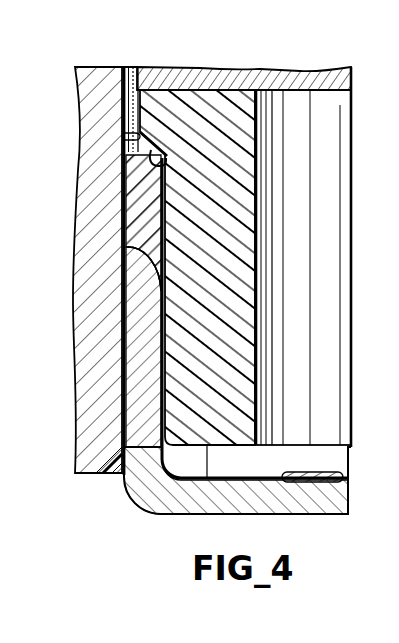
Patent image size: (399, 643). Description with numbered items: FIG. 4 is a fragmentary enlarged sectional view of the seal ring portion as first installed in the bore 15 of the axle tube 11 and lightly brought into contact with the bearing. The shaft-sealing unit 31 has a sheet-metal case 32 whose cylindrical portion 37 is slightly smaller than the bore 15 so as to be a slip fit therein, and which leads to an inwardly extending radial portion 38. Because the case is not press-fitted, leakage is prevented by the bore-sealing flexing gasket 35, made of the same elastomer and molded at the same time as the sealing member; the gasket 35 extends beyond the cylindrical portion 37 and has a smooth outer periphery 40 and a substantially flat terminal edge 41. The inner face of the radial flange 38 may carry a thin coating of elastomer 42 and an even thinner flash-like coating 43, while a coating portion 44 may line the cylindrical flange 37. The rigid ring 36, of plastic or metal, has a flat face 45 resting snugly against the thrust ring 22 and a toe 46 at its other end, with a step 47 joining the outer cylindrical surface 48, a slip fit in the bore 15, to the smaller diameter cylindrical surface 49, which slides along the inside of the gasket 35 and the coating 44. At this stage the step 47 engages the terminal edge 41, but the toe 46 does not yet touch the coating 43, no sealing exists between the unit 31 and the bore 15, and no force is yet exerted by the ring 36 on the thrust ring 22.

The axle tube 11 is at (82, 224).
The bore 15 is at (125, 138).
The thrust ring 22 is at (242, 70).
The shaft-sealing unit 31 is at (348, 502).
The metal case 32 is at (142, 448).
The bore-sealing flexing gasket 35 is at (137, 206).
The rigid ring 36 is at (241, 154).
The cylindrical portion 37 is at (125, 378).
The radial portion 38 is at (296, 507).
The outer periphery 40 is at (125, 245).
The terminal edge 41 is at (150, 152).
The thin coating of elastomer 42 is at (345, 477).
The thinner coating portion 43 is at (187, 485).
The coating portion 44 is at (158, 290).
The flat face 45 is at (194, 88).
The toe 46 is at (207, 480).
The step 47 is at (165, 164).
The outer cylindrical surface 48 is at (141, 112).
The smaller diameter cylindrical surface 49 is at (160, 322).